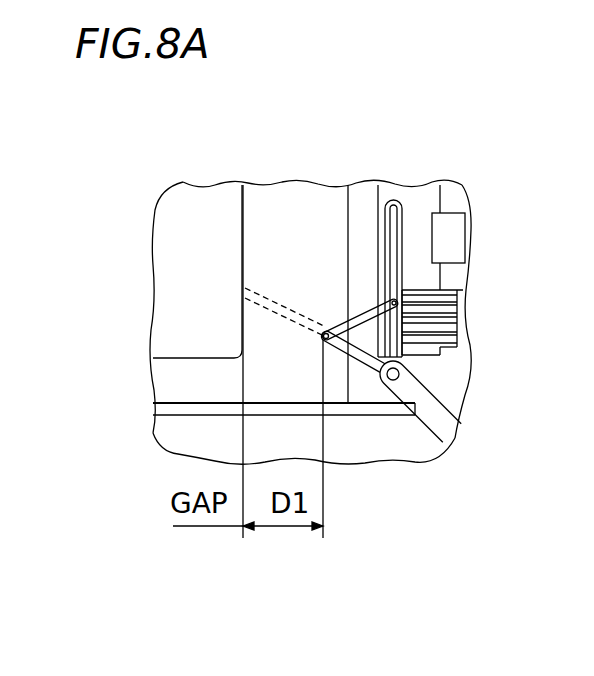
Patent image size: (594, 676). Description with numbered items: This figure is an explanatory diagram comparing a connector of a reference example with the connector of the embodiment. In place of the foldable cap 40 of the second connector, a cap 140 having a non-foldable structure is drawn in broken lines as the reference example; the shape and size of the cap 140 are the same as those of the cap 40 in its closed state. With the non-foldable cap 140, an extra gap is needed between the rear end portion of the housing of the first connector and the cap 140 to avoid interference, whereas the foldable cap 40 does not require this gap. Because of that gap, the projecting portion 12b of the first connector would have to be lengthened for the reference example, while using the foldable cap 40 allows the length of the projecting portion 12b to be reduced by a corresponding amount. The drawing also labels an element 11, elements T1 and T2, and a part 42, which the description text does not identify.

The main body 11 is at (168, 328).
The projecting portion 12b is at (178, 412).
The cap 140 is at (288, 306).
The second terminal T2 is at (465, 238).
The first terminal T1 is at (465, 310).
The cap 40 is at (434, 405).
The pin 42 is at (399, 373).